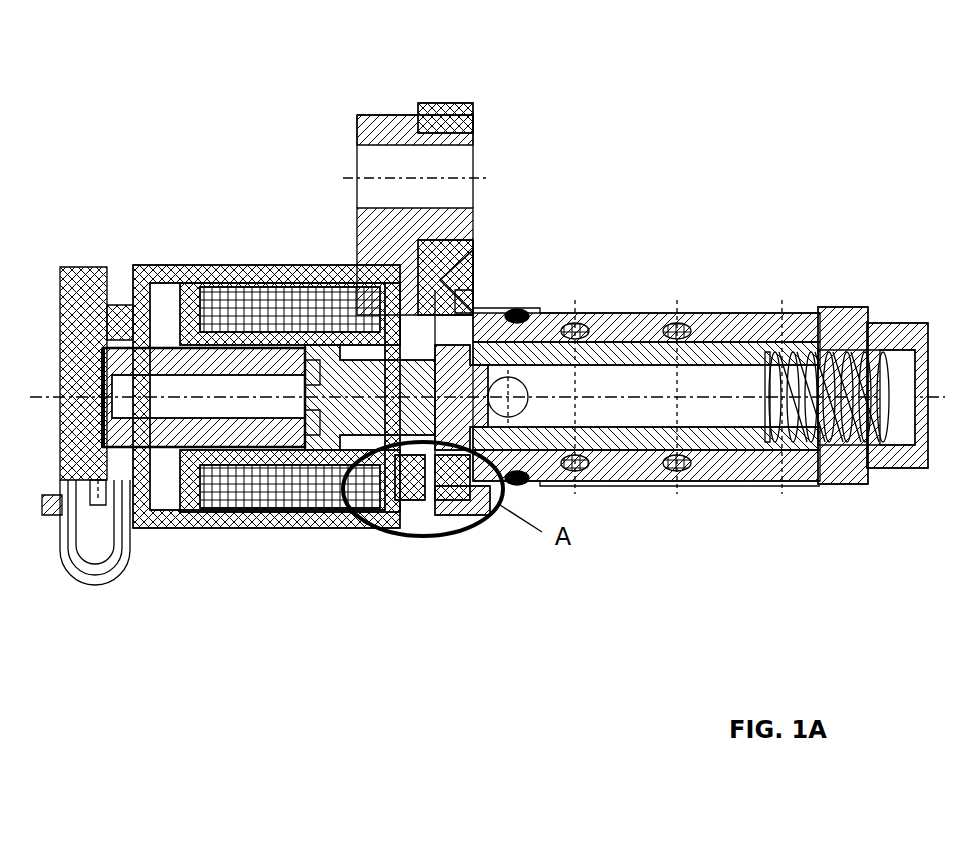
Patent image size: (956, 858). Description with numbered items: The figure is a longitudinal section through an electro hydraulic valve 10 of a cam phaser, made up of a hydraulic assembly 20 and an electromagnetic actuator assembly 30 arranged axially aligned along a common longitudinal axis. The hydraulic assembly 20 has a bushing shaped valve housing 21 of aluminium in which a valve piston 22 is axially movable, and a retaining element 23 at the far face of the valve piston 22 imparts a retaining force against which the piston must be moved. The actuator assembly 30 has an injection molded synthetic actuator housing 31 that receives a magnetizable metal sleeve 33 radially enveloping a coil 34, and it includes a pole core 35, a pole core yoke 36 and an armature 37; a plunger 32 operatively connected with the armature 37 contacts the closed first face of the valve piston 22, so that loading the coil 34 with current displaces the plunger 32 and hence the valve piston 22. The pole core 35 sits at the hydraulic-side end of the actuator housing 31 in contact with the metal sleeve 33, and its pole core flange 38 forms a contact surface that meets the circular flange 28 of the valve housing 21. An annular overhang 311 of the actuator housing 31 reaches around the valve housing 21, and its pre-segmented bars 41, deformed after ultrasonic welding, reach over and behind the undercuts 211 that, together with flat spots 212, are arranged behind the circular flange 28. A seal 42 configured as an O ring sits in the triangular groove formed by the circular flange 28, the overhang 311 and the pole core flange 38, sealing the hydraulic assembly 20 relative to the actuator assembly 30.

The electro hydraulic valve 10 is at (165, 85).
The hydraulic assembly 20 is at (618, 550).
The valve housing 21 is at (725, 320).
The valve piston 22 is at (610, 390).
The retaining element 23 is at (825, 398).
The circular flange 28 is at (448, 480).
The electromagnetic actuator assembly 30 is at (259, 557).
The actuator housing 31 is at (176, 262).
The plunger 32 is at (255, 395).
The metal sleeve 33 is at (271, 278).
The coil 34 is at (237, 283).
The pole core 35 is at (357, 433).
The pole core yoke 36 is at (140, 288).
The armature 37 is at (167, 430).
The pole core flange 38 is at (410, 475).
The bars 41 is at (470, 520).
The seal 42 is at (417, 287).
The undercuts 211 is at (470, 280).
The flat spots 212 is at (468, 298).
The annular overhang 311 is at (453, 267).